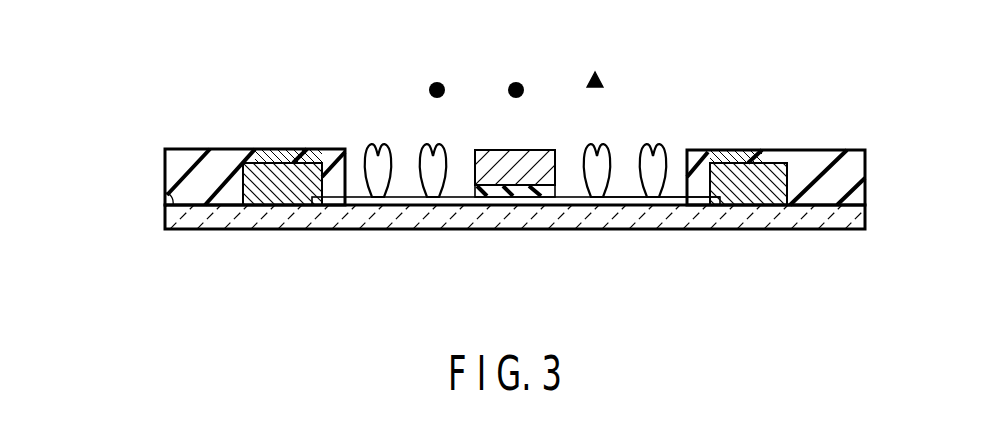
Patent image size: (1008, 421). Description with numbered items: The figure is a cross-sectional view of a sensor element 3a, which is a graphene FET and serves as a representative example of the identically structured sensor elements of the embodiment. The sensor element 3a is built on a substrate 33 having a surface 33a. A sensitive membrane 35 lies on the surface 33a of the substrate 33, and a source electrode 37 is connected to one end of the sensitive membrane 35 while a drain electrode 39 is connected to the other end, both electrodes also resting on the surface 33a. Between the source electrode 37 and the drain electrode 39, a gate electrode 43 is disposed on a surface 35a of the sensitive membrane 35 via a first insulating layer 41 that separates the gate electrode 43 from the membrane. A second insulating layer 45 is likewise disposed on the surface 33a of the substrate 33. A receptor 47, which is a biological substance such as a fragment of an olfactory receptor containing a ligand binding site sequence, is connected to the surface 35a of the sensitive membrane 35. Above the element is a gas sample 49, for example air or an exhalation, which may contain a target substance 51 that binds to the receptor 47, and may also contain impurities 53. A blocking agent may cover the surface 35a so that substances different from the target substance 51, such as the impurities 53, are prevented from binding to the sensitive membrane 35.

The sensor element 3a is at (112, 138).
The substrate 33 is at (201, 219).
The surface of the substrate 33a is at (165, 193).
The sensitive membrane 35 is at (617, 201).
The surface of the sensitive membrane 35a is at (680, 196).
The source electrode 37 is at (279, 203).
The drain electrode 39 is at (752, 199).
The first insulating layer 41 is at (525, 190).
The gate electrode 43 is at (498, 168).
The second insulating layer 45 is at (841, 203).
The receptor 47 is at (374, 196).
The gas sample 49 is at (504, 70).
The target substance 51 is at (437, 82).
The impurities 53 is at (592, 72).